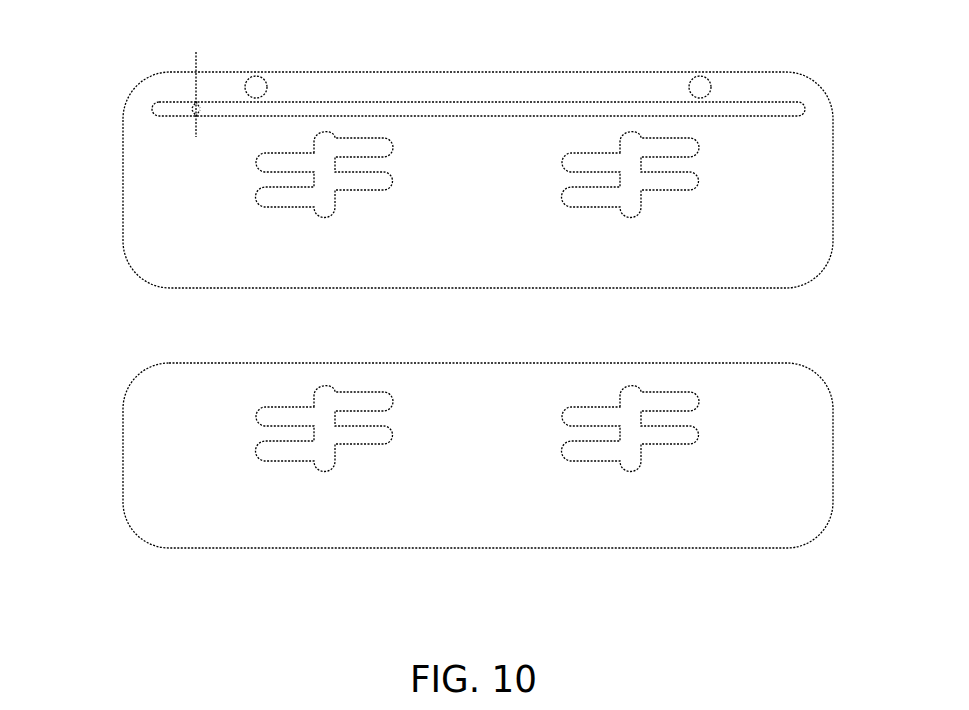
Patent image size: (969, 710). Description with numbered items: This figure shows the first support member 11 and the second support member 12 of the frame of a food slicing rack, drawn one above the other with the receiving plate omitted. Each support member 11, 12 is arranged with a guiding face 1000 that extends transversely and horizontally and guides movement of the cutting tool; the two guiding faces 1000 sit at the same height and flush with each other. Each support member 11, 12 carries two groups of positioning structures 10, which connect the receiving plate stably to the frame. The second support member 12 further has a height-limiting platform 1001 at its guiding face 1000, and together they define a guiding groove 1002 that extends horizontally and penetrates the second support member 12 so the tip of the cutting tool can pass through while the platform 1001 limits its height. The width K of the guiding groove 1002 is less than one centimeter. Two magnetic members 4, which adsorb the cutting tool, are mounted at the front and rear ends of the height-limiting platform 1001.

The guiding face 1000 is at (464, 301).
The height-limiting platform 1001 is at (429, 88).
The guiding groove 1002 is at (509, 109).
The second support member 12 is at (148, 195).
The first support member 11 is at (142, 455).
The positioning structures 10 is at (357, 145).
The magnetic member 4 is at (255, 90).
The width of the guiding groove K is at (192, 82).